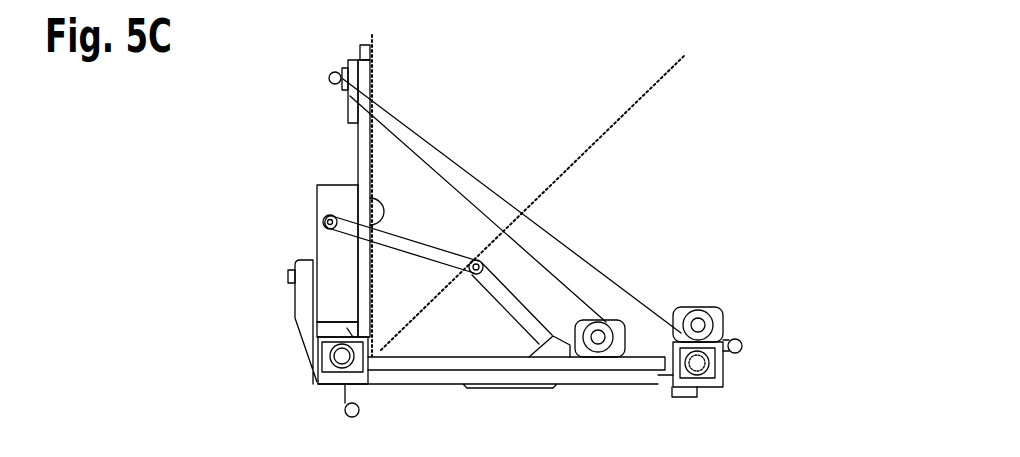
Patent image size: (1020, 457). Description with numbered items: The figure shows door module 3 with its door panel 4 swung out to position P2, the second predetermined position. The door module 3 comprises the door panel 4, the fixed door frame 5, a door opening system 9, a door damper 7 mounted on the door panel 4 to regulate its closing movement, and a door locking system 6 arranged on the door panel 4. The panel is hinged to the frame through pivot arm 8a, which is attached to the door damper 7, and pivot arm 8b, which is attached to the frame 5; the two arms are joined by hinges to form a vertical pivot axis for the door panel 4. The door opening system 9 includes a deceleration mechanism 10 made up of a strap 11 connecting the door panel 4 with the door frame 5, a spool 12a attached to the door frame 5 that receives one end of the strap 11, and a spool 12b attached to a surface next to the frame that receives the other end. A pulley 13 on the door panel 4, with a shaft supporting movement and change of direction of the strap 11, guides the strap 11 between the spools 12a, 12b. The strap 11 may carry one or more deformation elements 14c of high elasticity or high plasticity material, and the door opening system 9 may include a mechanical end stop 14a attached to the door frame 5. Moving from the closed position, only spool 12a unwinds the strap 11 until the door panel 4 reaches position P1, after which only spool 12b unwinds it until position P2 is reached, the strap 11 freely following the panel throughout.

The door module 3 is at (188, 143).
The door panel 4 is at (358, 143).
The door frame 5 is at (318, 380).
The door locking system 6 is at (373, 50).
The door damper 7 is at (327, 252).
The pivot arm 8a is at (422, 246).
The pivot arm 8b is at (510, 298).
The door opening system 9 is at (252, 214).
The deceleration mechanism 10 is at (661, 173).
The strap 11 is at (553, 238).
The spool 12a is at (620, 340).
The spool 12b is at (717, 312).
The pulley 13 is at (329, 78).
The mechanical end stop 14a is at (298, 317).
The deformation element 14c is at (610, 273).
The position P1 is at (548, 192).
The position P2 is at (389, 189).